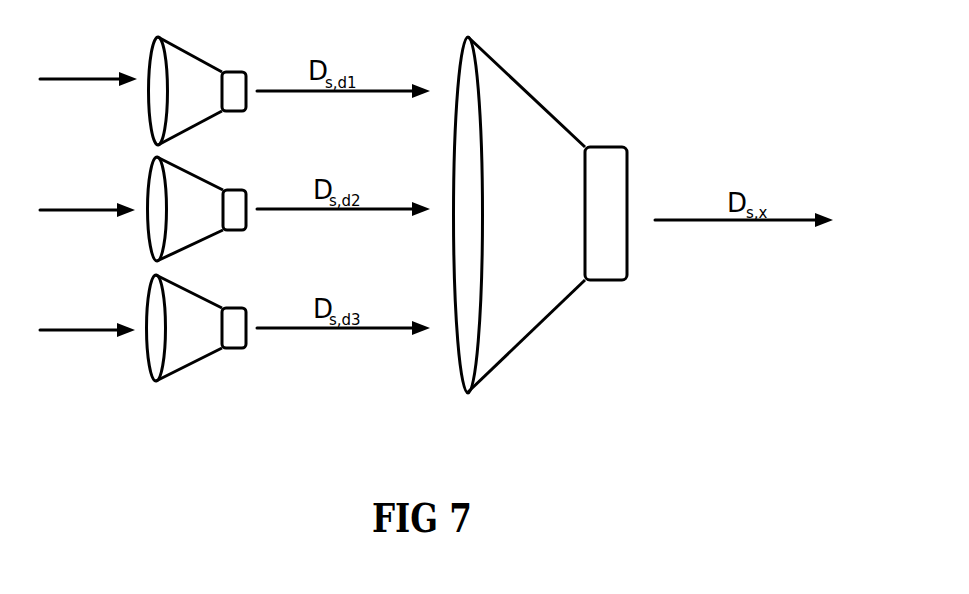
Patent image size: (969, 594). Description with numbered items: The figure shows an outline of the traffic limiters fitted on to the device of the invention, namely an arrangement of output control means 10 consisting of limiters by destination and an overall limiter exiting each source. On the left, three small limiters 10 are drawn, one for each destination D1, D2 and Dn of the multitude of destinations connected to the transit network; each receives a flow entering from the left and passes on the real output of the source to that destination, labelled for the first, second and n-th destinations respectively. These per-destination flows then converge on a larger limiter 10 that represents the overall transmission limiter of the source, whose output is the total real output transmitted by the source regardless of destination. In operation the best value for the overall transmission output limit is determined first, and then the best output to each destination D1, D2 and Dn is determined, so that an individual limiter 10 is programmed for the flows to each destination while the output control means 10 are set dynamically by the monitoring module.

The output control means 10 is at (389, 233).
The destination D1 is at (198, 91).
The destination D2 is at (197, 209).
The destination Dn is at (197, 328).